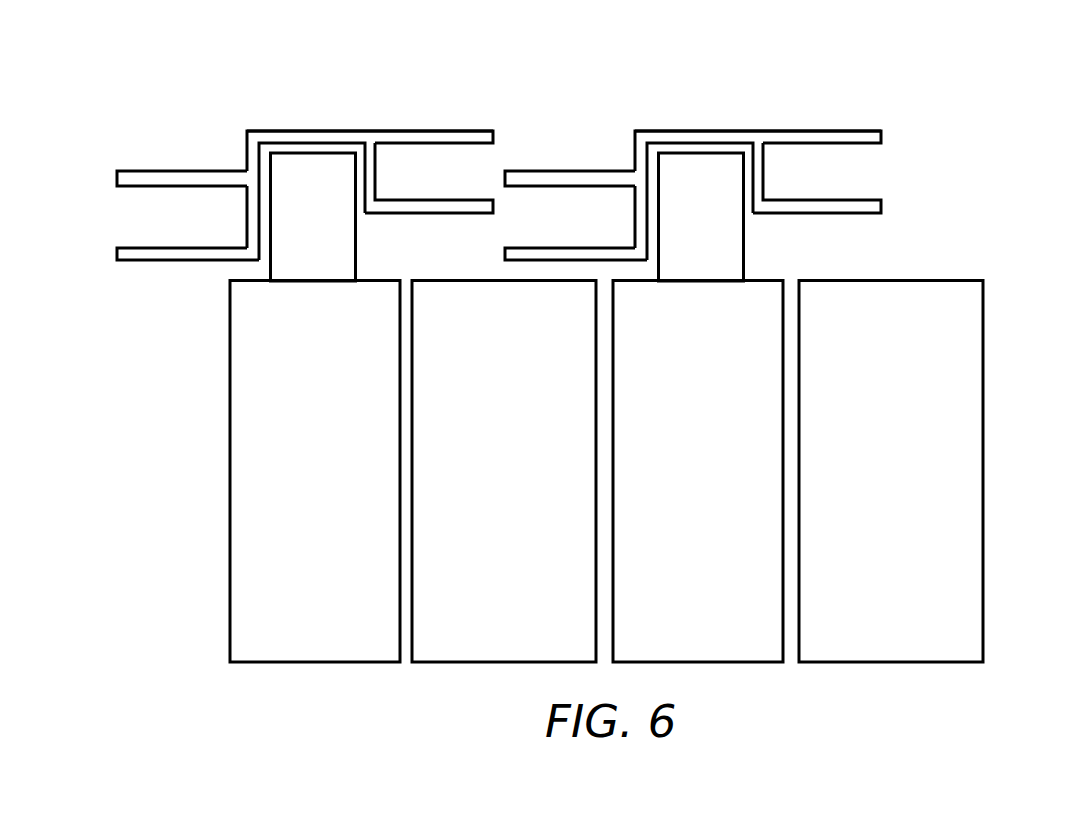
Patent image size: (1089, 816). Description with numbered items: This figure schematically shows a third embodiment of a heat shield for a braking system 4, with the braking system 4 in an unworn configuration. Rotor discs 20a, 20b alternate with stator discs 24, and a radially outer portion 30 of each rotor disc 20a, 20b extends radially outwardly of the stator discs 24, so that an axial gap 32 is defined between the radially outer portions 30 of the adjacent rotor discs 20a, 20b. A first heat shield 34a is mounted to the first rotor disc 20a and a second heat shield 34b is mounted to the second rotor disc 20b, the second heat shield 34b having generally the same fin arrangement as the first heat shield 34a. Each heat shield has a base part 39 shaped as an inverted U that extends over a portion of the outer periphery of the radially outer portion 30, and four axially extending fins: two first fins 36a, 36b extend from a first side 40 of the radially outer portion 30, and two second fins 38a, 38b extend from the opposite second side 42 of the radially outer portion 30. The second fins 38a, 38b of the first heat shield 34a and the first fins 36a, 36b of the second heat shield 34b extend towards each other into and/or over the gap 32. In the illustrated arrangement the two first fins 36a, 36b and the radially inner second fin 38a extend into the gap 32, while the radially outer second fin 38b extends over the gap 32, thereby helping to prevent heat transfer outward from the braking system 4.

The braking system 4 is at (1014, 204).
The axial gap 32 is at (522, 56).
The first rotor disc 20a is at (335, 482).
The second rotor disc 20b is at (718, 482).
The stator disc 24 is at (517, 482).
The radially outer portion 30 is at (327, 228).
The first heat shield 34a is at (282, 131).
The second heat shield 34b is at (670, 131).
The first fin 36a is at (144, 248).
The first fin 36b is at (144, 171).
The second fin 38a is at (467, 200).
The second fin 38b is at (467, 131).
The base part 39 is at (339, 131).
The first side 40 is at (270, 167).
The second side 42 is at (356, 248).